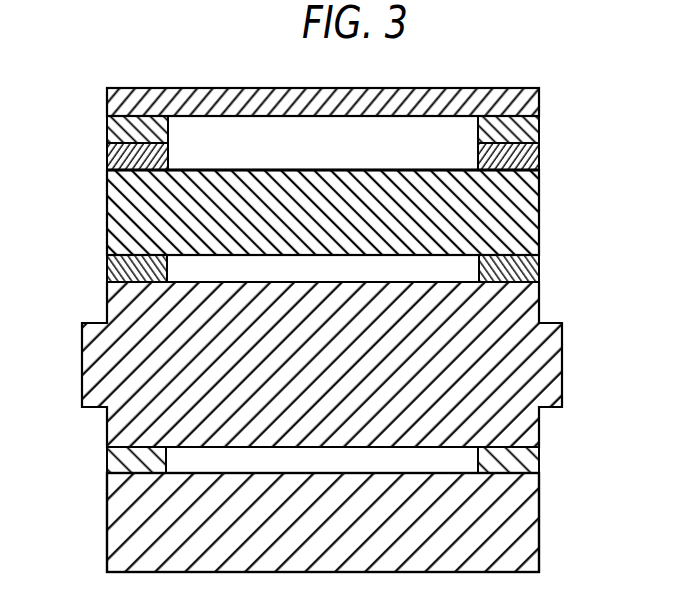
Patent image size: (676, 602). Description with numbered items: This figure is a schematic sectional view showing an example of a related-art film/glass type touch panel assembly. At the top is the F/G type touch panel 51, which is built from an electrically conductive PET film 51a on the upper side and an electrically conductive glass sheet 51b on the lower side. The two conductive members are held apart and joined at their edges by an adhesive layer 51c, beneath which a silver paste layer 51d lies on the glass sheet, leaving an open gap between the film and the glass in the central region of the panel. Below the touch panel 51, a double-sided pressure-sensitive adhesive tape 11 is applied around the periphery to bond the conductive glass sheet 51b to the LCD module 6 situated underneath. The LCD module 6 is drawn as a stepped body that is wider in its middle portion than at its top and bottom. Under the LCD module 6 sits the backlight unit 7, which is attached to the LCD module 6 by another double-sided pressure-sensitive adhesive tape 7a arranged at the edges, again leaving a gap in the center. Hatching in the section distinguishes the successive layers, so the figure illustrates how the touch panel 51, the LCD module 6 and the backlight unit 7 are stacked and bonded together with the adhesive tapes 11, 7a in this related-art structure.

The F/G type touch panel 51 is at (354, 171).
The electrically conductive PET film 51a is at (540, 98).
The electrically conductive glass sheet 51b is at (362, 212).
The adhesive layer 51c is at (540, 127).
The silver paste layer 51d is at (540, 156).
The double-sided pressure-sensitive adhesive tape 11 is at (540, 267).
The LCD module 6 is at (614, 287).
The backlight unit 7 is at (540, 520).
The double-sided pressure-sensitive adhesive tape 7a is at (540, 460).